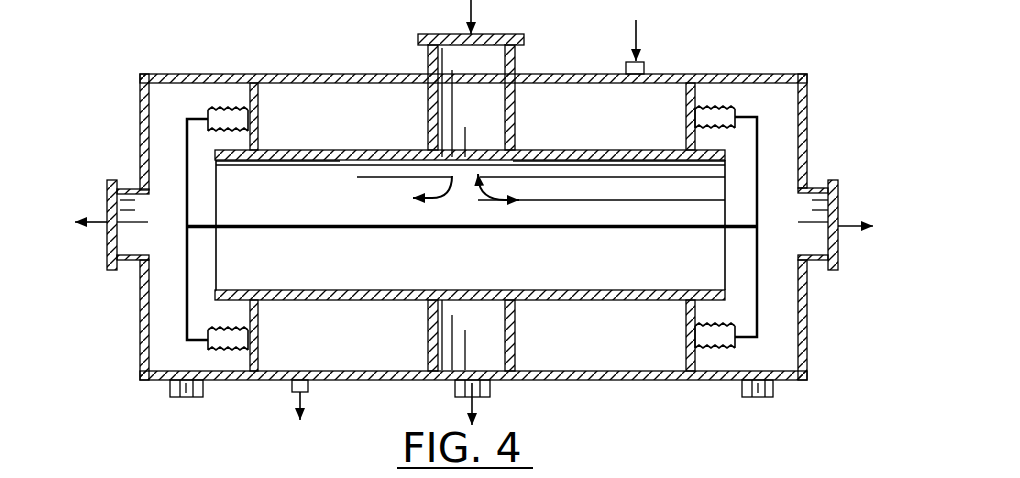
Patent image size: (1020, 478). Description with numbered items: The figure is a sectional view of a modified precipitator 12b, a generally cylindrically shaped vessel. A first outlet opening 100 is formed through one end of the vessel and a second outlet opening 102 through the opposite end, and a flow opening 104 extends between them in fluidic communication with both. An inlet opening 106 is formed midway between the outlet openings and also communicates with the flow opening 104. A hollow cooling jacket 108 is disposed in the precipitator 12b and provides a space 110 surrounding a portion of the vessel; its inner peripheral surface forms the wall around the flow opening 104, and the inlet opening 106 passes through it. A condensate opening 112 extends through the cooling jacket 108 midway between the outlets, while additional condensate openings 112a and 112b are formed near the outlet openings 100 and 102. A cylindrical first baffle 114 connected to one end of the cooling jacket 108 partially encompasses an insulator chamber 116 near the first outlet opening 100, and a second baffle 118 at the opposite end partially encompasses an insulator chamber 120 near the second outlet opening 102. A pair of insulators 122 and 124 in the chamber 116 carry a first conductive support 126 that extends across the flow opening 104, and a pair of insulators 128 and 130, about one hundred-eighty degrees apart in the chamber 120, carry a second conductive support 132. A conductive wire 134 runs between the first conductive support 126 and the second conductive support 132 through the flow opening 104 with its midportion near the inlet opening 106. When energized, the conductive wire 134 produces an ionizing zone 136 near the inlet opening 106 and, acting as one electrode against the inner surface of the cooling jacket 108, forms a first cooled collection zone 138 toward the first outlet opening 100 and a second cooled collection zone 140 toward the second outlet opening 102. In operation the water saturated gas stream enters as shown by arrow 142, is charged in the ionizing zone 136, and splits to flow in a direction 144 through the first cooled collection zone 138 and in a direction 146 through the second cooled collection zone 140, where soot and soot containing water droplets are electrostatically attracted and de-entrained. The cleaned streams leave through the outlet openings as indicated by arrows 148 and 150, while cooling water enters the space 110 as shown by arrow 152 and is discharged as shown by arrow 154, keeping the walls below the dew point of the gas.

The first outlet opening 100 is at (125, 238).
The second outlet opening 102 is at (838, 210).
The flow opening 104 is at (315, 163).
The inlet opening 106 is at (505, 60).
The cooling jacket 108 is at (260, 104).
The space 110 is at (363, 112).
The condensate opening 112 is at (483, 398).
The additional condensate opening 112a is at (175, 398).
The additional condensate opening 112b is at (772, 398).
The first baffle 114 is at (232, 163).
The insulator chamber 116 is at (228, 358).
The second baffle 118 is at (713, 162).
The insulator chamber 120 is at (715, 360).
The insulator 122 is at (220, 108).
The insulator 124 is at (208, 343).
The first conductive support 126 is at (189, 262).
The insulator 128 is at (705, 354).
The insulator 130 is at (715, 105).
The second conductive support 132 is at (760, 153).
The conductive wire 134 is at (460, 228).
The ionizing zone 136 is at (513, 150).
The first cooled collection zone 138 is at (340, 263).
The second cooled collection zone 140 is at (602, 259).
The arrow 142 is at (468, 10).
The direction 144 is at (440, 200).
The direction 146 is at (495, 200).
The arrow 148 is at (98, 235).
The arrow 150 is at (843, 240).
The arrow 152 is at (637, 24).
The arrow 154 is at (305, 400).
The modified precipitator 12b is at (248, 73).